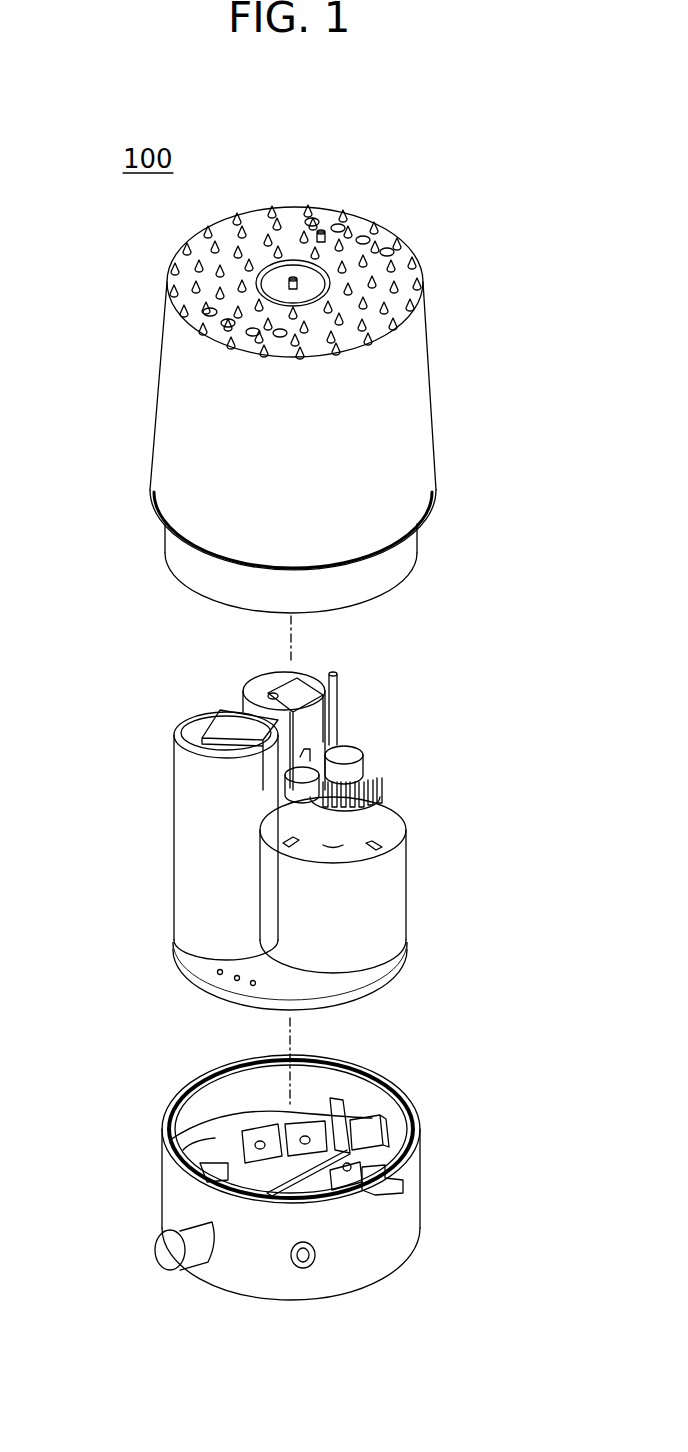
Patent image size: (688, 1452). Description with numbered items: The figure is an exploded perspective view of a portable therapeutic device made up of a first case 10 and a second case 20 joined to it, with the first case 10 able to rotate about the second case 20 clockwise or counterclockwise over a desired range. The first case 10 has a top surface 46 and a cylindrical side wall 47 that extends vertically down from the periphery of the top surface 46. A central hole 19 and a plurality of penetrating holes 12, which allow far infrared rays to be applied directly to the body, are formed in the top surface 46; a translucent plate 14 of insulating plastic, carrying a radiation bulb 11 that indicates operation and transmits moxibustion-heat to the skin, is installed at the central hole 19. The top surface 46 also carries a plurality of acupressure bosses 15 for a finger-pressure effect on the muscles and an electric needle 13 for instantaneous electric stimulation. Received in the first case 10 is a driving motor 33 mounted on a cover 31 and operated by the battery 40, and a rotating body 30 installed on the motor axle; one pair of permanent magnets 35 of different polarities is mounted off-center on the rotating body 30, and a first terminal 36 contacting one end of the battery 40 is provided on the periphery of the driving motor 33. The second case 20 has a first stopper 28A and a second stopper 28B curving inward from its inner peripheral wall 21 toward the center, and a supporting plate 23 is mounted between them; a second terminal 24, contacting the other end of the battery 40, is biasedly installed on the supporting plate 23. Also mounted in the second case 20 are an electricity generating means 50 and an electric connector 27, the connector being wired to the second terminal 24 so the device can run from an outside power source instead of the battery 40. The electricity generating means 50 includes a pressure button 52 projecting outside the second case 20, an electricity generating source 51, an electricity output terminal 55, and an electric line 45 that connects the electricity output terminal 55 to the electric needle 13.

The first case 10 is at (173, 413).
The radiation bulb 11 is at (298, 278).
The penetrating holes 12 is at (203, 312).
The electric needle 13 is at (322, 239).
The translucent plate 14 is at (312, 287).
The acupressure bosses 15 is at (406, 318).
The central hole 19 is at (258, 273).
The top surface 46 is at (293, 214).
The cylindrical side wall 47 is at (468, 413).
The first terminal 36 is at (273, 690).
The battery 40 is at (188, 867).
The electric line 45 is at (334, 707).
The permanent magnets 35 is at (342, 750).
The driving motor 33 is at (383, 793).
The rotating body 30 is at (398, 896).
The cover 31 is at (313, 983).
The second case 20 is at (421, 1204).
The inner peripheral wall 21 is at (338, 1082).
The supporting plate 23 is at (207, 1140).
The second terminal 24 is at (260, 1140).
The first stopper 28A is at (345, 1100).
The second stopper 28B is at (208, 1170).
The electricity output terminal 55 is at (383, 1180).
The electricity generating source 51 is at (320, 1187).
The pressure button 52 is at (168, 1250).
The electricity generating means 50 is at (158, 1272).
The electric connector 27 is at (315, 1260).